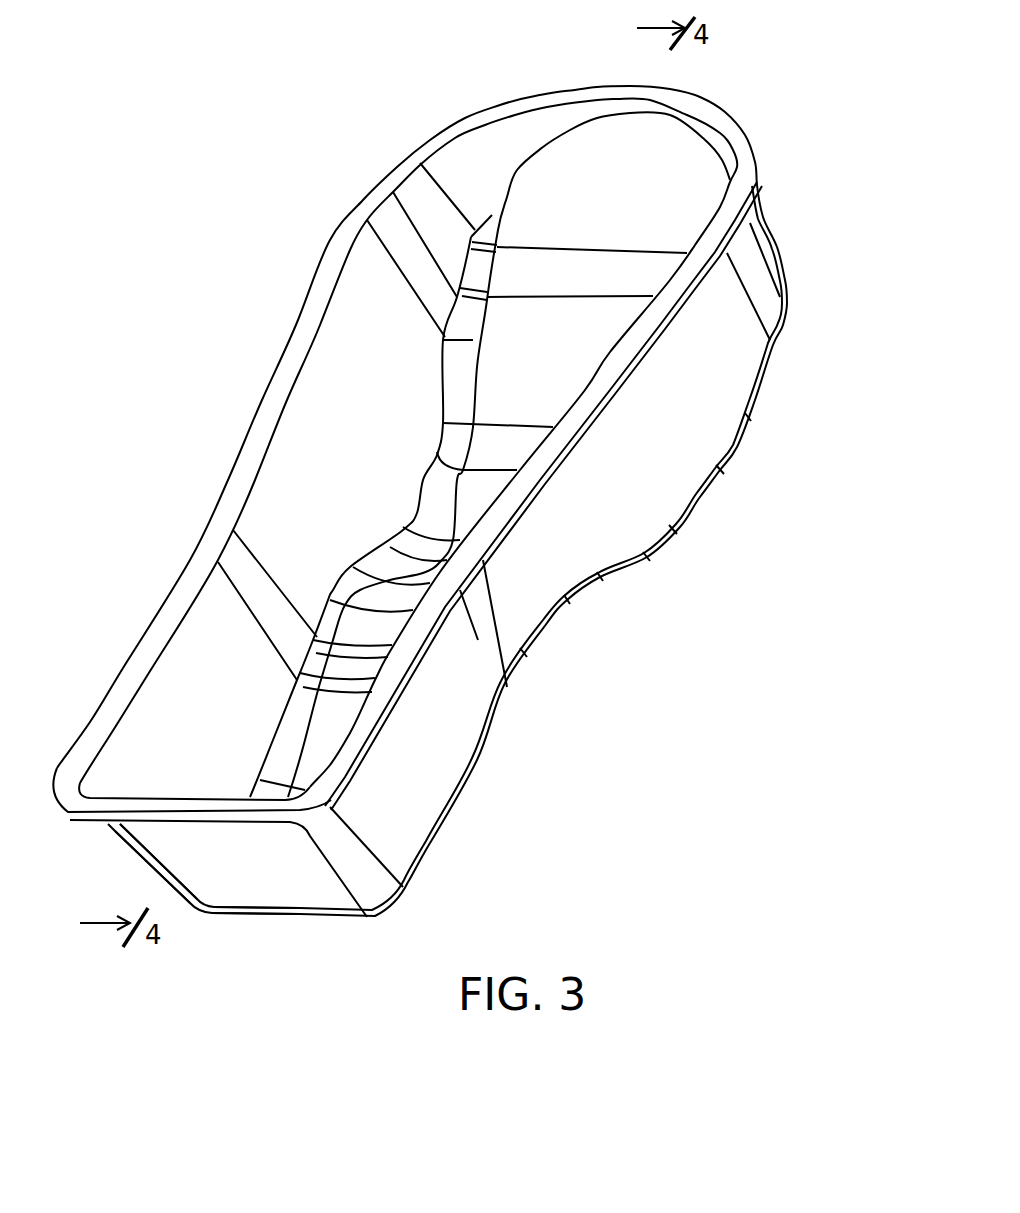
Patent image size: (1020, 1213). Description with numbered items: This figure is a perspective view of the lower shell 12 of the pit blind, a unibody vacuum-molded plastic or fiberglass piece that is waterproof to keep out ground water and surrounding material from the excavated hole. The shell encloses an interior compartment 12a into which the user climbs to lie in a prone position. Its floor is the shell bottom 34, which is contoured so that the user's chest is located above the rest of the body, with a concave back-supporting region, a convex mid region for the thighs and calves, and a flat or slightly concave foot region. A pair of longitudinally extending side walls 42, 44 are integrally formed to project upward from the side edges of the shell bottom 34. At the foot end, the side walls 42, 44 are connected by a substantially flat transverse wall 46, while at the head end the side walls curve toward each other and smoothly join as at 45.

The lower shell 12 is at (767, 490).
The interior compartment 12a is at (407, 421).
The shell bottom 34 is at (677, 180).
The side wall 42 is at (200, 668).
The side wall 44 is at (450, 713).
The joined head portion of side walls 45 is at (615, 107).
The transverse wall 46 is at (183, 855).